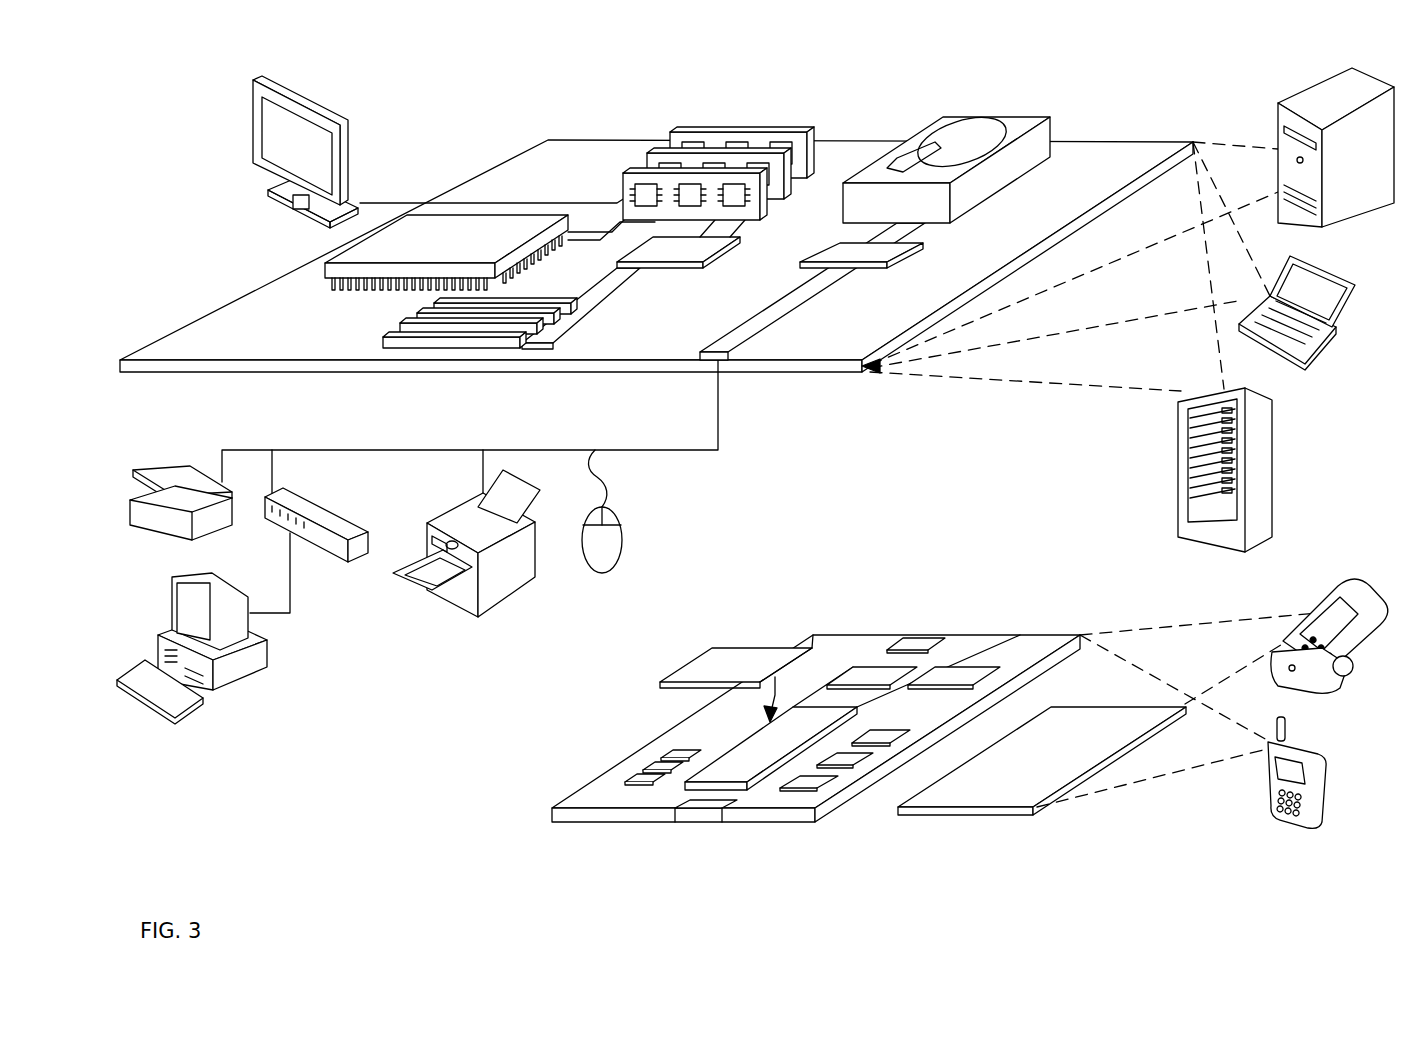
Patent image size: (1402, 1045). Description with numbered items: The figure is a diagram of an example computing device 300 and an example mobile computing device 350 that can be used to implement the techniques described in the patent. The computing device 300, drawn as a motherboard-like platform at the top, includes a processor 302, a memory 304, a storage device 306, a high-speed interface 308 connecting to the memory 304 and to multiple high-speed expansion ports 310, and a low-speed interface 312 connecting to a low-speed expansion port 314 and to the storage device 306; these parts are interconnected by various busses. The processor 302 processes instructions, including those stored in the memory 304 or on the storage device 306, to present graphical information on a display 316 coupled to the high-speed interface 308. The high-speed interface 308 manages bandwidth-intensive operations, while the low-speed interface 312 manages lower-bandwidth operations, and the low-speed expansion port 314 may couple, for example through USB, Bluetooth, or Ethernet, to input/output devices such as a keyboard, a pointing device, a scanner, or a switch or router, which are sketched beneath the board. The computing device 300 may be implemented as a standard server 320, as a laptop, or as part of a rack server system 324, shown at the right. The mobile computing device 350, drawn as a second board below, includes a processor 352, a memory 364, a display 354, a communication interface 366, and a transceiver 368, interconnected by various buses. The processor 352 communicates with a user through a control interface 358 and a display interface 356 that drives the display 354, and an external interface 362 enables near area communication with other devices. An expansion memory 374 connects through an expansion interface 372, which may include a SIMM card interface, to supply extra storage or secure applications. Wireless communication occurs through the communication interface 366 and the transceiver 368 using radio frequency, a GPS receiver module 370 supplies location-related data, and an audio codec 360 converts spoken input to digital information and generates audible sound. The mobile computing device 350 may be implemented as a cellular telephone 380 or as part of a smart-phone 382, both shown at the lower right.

The computing device 300 is at (463, 108).
The processor 302 is at (325, 268).
The memory 304 is at (683, 132).
The storage device 306 is at (933, 118).
The high-speed interface 308 is at (653, 252).
The high-speed expansion ports 310 is at (400, 328).
The low-speed interface 312 is at (838, 253).
The low-speed expansion port 314 is at (730, 362).
The display 316 is at (260, 84).
The standard server 320 is at (1276, 126).
The rack server system 324 is at (1178, 497).
The mobile computing device 350 is at (527, 826).
The processor 352 is at (740, 773).
The display 354 is at (998, 793).
The display interface 356 is at (813, 780).
The control interface 358 is at (860, 760).
The audio codec 360 is at (878, 735).
The external interface 362 is at (703, 813).
The memory 364 is at (648, 762).
The communication interface 366 is at (870, 675).
The transceiver 368 is at (955, 675).
The GPS receiver module 370 is at (923, 637).
The expansion interface 372 is at (793, 648).
The expansion memory 374 is at (713, 647).
The cellular telephone 380 is at (1312, 560).
The smart-phone 382 is at (1263, 780).